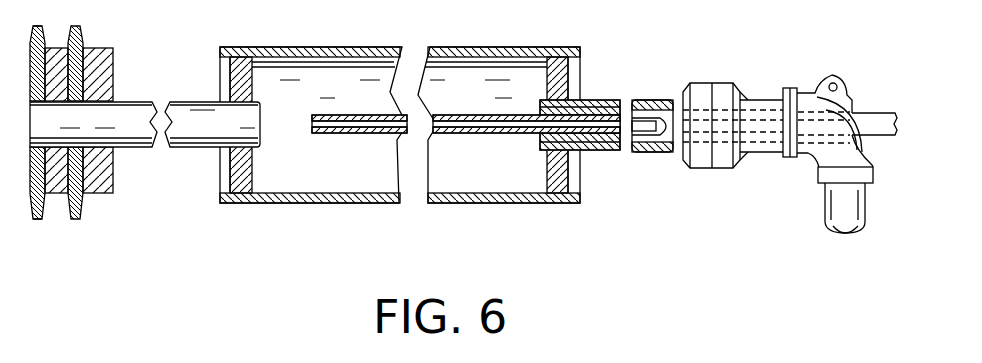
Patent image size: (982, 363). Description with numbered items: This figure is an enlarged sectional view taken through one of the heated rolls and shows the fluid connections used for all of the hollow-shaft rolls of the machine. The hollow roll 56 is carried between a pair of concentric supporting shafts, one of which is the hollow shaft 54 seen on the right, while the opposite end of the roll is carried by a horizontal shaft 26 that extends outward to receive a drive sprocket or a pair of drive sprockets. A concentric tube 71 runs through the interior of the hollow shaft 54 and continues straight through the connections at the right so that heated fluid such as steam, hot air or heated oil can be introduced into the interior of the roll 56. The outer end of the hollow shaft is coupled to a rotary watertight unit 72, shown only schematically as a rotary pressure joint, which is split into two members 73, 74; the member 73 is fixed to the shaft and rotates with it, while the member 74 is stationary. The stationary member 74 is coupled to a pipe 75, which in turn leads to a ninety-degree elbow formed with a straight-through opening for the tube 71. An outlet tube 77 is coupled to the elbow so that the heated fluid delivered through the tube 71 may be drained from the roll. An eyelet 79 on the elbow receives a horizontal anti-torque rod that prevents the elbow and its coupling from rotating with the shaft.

The horizontal shaft 26 is at (184, 120).
The shaft 54 is at (610, 99).
The hollow roll 56 is at (470, 47).
The concentric tube 71 is at (447, 118).
The rotary watertight unit 72 is at (689, 119).
The member 73 is at (700, 88).
The member 74 is at (724, 88).
The pipe 75 is at (763, 100).
The outlet tube 77 is at (843, 208).
The eyelet 79 is at (836, 82).